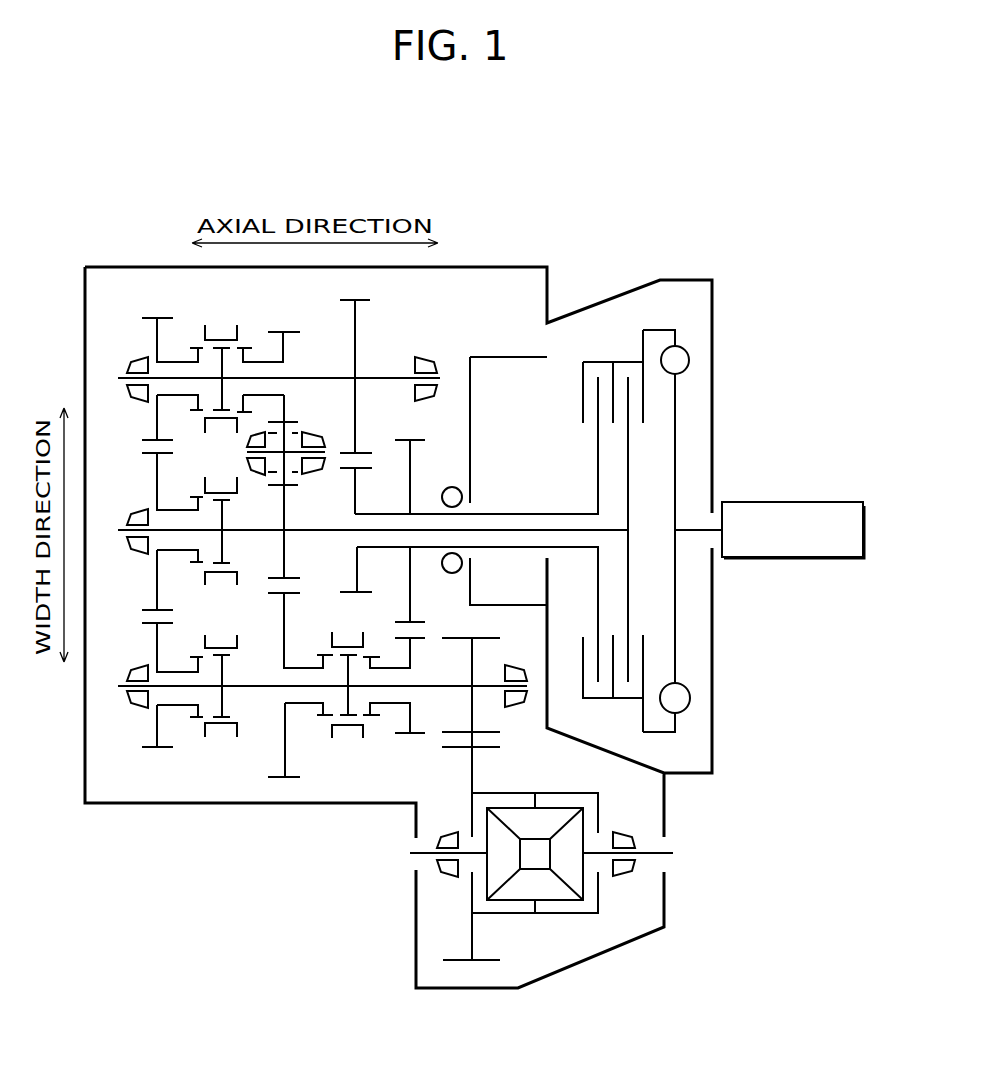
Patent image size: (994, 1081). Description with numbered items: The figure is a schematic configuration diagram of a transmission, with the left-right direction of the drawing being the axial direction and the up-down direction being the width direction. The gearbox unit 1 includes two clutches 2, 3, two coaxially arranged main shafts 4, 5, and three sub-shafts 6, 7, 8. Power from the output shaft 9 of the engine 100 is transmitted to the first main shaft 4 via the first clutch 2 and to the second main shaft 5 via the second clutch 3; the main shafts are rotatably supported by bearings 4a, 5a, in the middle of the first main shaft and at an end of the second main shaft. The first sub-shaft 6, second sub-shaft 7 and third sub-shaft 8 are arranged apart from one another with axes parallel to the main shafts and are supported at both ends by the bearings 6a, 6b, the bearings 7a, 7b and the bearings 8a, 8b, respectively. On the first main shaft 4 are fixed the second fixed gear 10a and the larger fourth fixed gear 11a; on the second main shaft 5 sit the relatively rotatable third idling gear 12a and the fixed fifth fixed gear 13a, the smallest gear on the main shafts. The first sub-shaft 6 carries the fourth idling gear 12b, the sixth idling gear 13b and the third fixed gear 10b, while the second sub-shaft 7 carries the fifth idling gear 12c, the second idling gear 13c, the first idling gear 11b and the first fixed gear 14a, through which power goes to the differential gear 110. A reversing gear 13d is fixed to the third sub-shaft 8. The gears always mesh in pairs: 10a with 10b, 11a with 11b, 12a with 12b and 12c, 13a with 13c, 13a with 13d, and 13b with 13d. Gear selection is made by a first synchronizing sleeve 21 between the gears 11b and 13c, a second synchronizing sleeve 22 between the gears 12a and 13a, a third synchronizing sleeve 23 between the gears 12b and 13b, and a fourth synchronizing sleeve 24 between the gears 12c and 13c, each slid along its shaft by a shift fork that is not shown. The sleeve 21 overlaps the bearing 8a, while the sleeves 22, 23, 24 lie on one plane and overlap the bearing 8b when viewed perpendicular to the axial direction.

The gearbox unit 1 is at (616, 211).
The first clutch 2 is at (596, 360).
The second clutch 3 is at (627, 360).
The first main shaft 4 is at (574, 513).
The bearing 4a is at (451, 487).
The second main shaft 5 is at (516, 528).
The bearing 5a is at (134, 514).
The first sub-shaft 6 is at (378, 377).
The bearing 6a is at (420, 355).
The bearing 6b is at (133, 401).
The second sub-shaft 7 is at (435, 684).
The bearing 7a is at (515, 710).
The bearing 7b is at (130, 711).
The third sub-shaft 8 is at (297, 446).
The bearing 8a is at (310, 434).
The bearing 8b is at (246, 442).
The output shaft 9 is at (693, 527).
The second fixed gear 10a is at (365, 470).
The third fixed gear 10b is at (364, 298).
The fourth fixed gear 11a is at (403, 440).
The first idling gear 11b is at (407, 735).
The third idling gear 12a is at (145, 610).
The fourth idling gear 12b is at (150, 316).
The fifth idling gear 12c is at (150, 750).
The fifth fixed gear 13a is at (296, 486).
The sixth idling gear 13b is at (284, 329).
The second idling gear 13c is at (275, 778).
The reversing gear 13d is at (270, 482).
The first fixed gear 14a is at (488, 638).
The first synchronizing sleeve 21 is at (346, 738).
The second synchronizing sleeve 22 is at (224, 576).
The third synchronizing sleeve 23 is at (218, 325).
The fourth synchronizing sleeve 24 is at (218, 737).
The engine 100 is at (833, 500).
The differential gear 110 is at (553, 913).